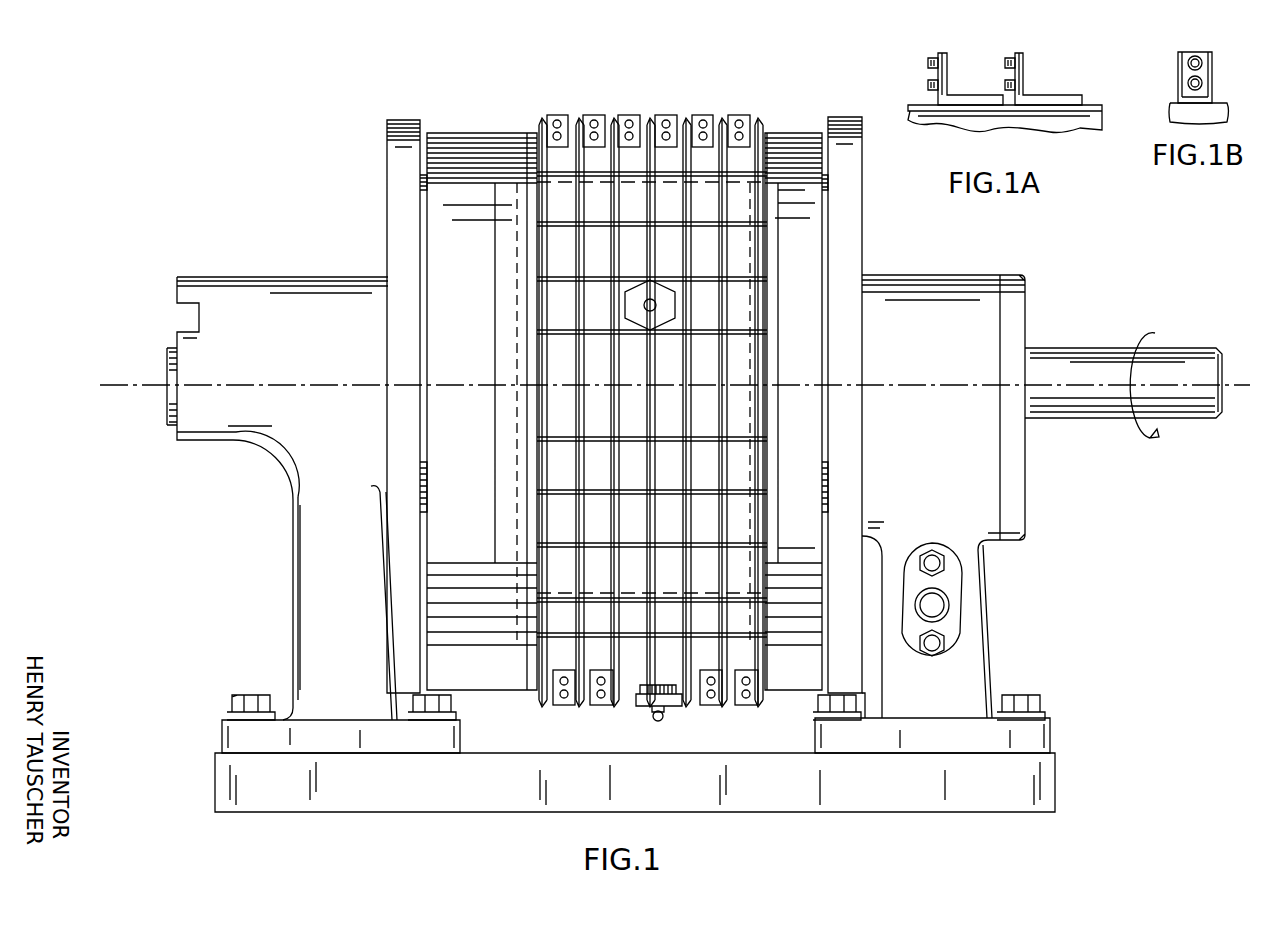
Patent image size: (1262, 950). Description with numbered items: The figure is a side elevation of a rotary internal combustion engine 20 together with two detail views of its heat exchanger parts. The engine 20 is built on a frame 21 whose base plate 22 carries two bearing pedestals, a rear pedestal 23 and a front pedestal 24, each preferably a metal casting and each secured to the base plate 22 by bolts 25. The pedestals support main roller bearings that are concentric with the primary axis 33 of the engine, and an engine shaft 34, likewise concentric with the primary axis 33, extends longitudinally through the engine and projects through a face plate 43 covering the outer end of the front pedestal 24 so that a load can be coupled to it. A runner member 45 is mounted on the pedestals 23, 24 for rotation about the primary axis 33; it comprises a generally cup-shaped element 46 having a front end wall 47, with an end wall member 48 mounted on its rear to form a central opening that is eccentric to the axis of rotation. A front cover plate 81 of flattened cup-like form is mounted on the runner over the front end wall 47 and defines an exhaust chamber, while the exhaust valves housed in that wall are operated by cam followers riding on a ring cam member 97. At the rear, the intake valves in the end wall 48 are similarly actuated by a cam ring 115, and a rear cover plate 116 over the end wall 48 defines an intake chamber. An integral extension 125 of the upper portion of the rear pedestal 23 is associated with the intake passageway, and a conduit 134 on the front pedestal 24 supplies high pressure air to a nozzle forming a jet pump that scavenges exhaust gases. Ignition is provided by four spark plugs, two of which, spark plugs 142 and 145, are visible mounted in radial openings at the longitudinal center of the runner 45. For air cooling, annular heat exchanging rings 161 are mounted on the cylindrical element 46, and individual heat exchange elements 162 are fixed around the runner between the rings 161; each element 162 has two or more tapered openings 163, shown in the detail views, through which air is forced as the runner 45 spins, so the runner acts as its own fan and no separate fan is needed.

In FIG. 1, the rotary internal combustion engine 20 is at (345, 136).
In FIG. 1, the frame 21 is at (796, 815).
In FIG. 1, the base plate 22 is at (903, 798).
In FIG. 1, the rear pedestal 23 is at (298, 580).
In FIG. 1, the front pedestal 24 is at (978, 572).
In FIG. 1, the bolts 25 is at (245, 698).
In FIG. 1, the primary axis 33 is at (135, 383).
In FIG. 1, the engine shaft 34 is at (165, 432).
In FIG. 1, the face plate 43 is at (1005, 322).
In FIG. 1, the runner member 45 is at (712, 102).
In FIG. 1, the cup-shaped element 46 is at (775, 132).
In FIG. 1A, the cup-shaped element 46 is at (1050, 125).
In FIG. 1B, the cup-shaped element 46 is at (1172, 115).
In FIG. 1, the front end wall 47 is at (770, 344).
In FIG. 1, the end wall member 48 is at (505, 453).
In FIG. 1, the front cover plate 81 is at (806, 283).
In FIG. 1, the ring cam member 97 is at (845, 226).
In FIG. 1, the cam ring 115 is at (395, 226).
In FIG. 1, the rear cover plate 116 is at (468, 357).
In FIG. 1, the integral extension of rear pedestal 125 is at (233, 445).
In FIG. 1, the conduit 134 is at (955, 607).
In FIG. 1, the spark plug 142 is at (665, 306).
In FIG. 1, the spark plug 145 is at (655, 708).
In FIG. 1, the annular heat exchanging rings 161 is at (603, 112).
In FIG. 1, the heat exchange elements 162 is at (668, 112).
In FIG. 1A, the heat exchange elements 162 is at (1022, 56).
In FIG. 1B, the heat exchange elements 162 is at (1212, 55).
In FIG. 1A, the tapered openings 163 is at (930, 85).
In FIG. 1B, the tapered openings 163 is at (1190, 83).